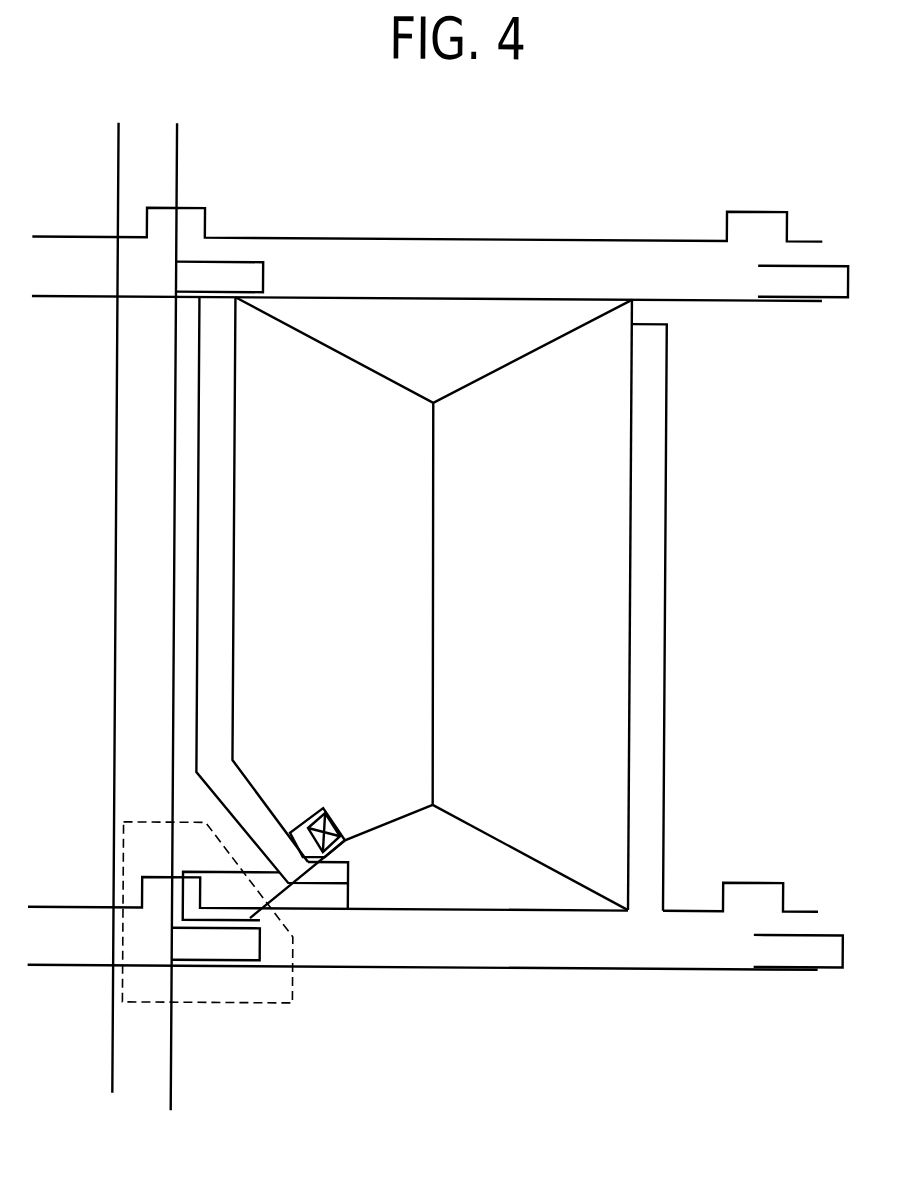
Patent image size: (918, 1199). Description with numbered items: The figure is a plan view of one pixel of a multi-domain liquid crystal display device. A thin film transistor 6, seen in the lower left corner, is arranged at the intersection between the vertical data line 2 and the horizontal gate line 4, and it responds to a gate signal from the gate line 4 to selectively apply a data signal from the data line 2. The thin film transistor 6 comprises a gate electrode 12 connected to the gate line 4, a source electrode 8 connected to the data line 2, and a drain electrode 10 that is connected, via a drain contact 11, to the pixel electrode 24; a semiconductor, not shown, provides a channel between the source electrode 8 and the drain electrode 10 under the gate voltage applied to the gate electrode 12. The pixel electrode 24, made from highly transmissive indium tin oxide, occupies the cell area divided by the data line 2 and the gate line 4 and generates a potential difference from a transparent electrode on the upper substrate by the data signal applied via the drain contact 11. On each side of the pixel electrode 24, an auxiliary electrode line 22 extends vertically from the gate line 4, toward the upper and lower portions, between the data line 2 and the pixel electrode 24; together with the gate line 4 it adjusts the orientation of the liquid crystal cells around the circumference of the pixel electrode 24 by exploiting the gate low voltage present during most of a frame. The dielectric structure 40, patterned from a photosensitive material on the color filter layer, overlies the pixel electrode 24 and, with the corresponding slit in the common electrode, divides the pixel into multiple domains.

The data line 2 is at (117, 677).
The gate line 4 is at (252, 251).
The thin film transistor 6 is at (168, 825).
The source electrode 8 is at (234, 944).
The drain electrode 10 is at (275, 891).
The drain contact 11 is at (341, 832).
The gate electrode 12 is at (164, 892).
The auxiliary electrode line 22 is at (209, 446).
The pixel electrode 24 is at (431, 608).
The dielectric structure 40 is at (545, 351).